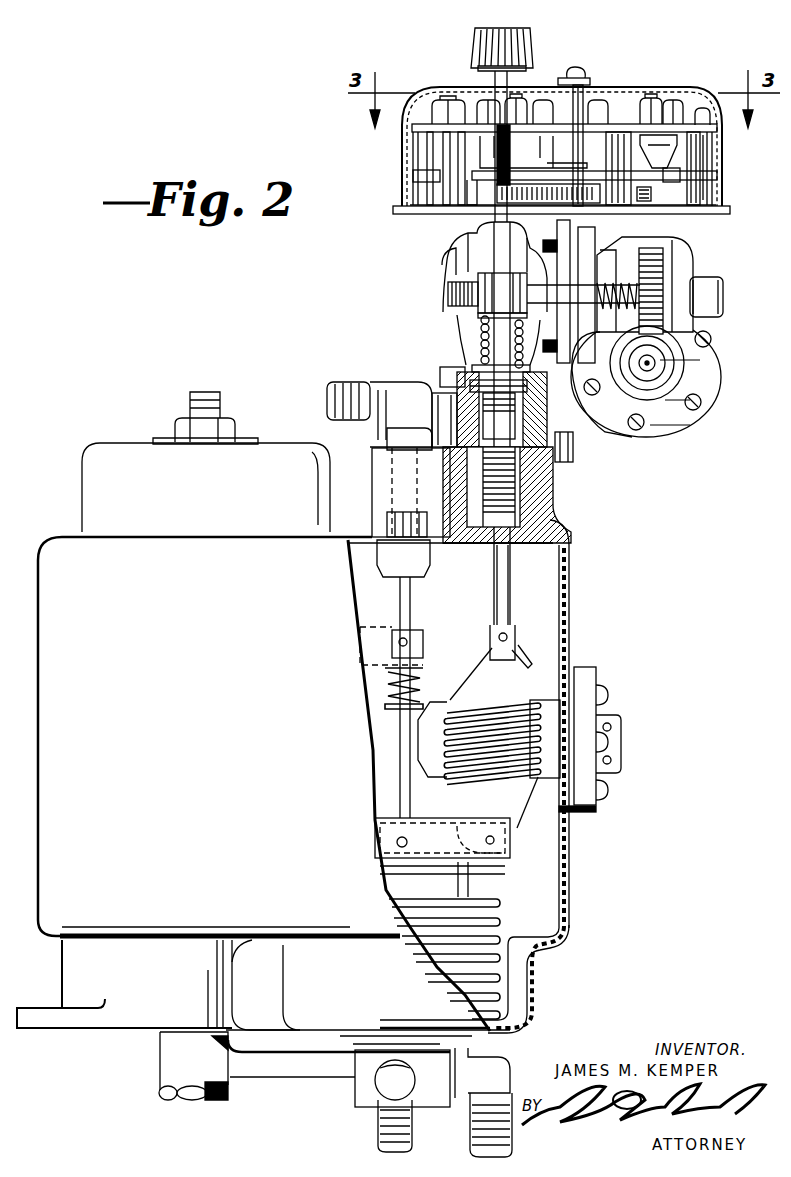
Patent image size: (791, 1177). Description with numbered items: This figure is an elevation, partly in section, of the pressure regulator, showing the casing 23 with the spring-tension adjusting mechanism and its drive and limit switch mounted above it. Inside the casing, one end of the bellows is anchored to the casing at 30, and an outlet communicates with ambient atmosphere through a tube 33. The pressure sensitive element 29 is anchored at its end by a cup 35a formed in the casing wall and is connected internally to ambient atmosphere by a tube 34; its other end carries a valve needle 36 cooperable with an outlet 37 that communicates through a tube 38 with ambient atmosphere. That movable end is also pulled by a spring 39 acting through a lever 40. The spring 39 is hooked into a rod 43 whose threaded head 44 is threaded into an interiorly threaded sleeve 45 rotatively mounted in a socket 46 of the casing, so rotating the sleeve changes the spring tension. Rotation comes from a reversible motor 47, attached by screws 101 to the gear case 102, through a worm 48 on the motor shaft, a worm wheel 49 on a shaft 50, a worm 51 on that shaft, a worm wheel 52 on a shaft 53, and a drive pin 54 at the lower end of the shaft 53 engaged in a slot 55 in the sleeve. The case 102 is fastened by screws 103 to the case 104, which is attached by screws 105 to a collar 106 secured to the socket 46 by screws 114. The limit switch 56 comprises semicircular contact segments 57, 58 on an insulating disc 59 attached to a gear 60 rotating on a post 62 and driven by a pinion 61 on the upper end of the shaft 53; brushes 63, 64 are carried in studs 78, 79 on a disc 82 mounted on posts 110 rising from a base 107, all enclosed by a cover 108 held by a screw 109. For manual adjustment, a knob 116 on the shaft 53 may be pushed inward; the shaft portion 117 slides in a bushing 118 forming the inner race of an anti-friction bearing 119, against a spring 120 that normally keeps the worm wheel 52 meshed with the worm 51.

The knob 116 is at (474, 49).
The stud 78 is at (531, 86).
The screw 109 is at (587, 76).
The post 62 is at (599, 90).
The stud 79 is at (654, 98).
The limit switch 56 is at (688, 88).
The disc 82 is at (406, 129).
The posts 110 is at (440, 168).
The brush 63 is at (505, 173).
The disc of insulating material 59 is at (493, 184).
The base 107 is at (406, 212).
The pinion 61 is at (490, 193).
The semicircular contact segment 57 is at (490, 171).
The brush 64 is at (663, 166).
The cover 108 is at (722, 165).
The semicircular contact segment 58 is at (672, 172).
The gear 60 is at (650, 201).
The shaft 53 is at (498, 246).
The case of the second gear set 104 is at (437, 265).
The worm wheel 49 is at (658, 254).
The gear case 102 is at (693, 254).
The shaft 50 is at (623, 289).
The worm 51 is at (477, 295).
The worm wheel 52 is at (478, 300).
The portion of the shaft 117 is at (480, 322).
The spring 120 is at (481, 338).
The anti-friction bearing 119 is at (470, 357).
The screws 105 is at (438, 384).
The screws 101 is at (712, 336).
The reversible motor 47 is at (715, 363).
The worm 48 is at (683, 378).
The tube 38 is at (358, 380).
The bushing 118 is at (432, 401).
The collar 106 is at (457, 410).
The slot 55 is at (520, 401).
The drive pin 54 is at (517, 412).
The screws 103 is at (618, 352).
The screws 114 is at (588, 451).
The interiorly threaded sleeve 45 is at (540, 476).
The threaded head 44 is at (540, 492).
The socket 46 is at (548, 515).
The anchor point of bellows 30 is at (208, 710).
The outlet 37 is at (409, 602).
The rod 43 is at (512, 598).
The casing 23 is at (572, 598).
The spring 39 is at (507, 717).
The valve needle 36 is at (410, 805).
The lever 40 is at (510, 851).
The pressure sensitive element 29 is at (503, 906).
The cup 35a is at (530, 991).
The tube 34 is at (452, 1045).
The tube 33 is at (267, 1070).